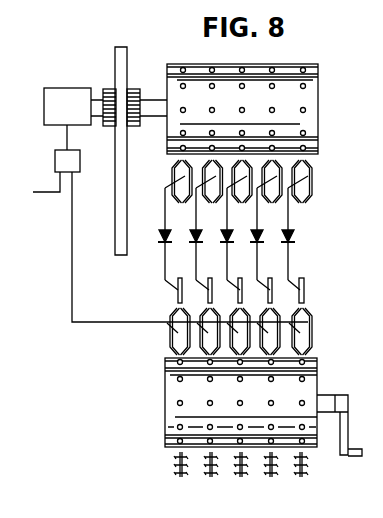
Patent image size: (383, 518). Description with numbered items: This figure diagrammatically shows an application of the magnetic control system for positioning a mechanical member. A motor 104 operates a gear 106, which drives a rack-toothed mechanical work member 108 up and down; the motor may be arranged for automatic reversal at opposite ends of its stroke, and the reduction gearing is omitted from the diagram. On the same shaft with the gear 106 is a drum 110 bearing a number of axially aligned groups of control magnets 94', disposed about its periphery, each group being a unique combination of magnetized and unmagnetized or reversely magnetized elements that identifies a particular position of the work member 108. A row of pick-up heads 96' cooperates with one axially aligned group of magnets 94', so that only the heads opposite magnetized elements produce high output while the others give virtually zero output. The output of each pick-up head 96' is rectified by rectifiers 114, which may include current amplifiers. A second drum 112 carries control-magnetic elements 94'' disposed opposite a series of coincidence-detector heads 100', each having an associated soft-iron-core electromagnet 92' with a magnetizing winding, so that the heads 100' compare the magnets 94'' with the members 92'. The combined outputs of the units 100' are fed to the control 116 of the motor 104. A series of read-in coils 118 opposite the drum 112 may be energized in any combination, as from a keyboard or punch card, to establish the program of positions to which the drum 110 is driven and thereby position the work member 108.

The motor 104 is at (65, 93).
The gear 106 is at (133, 89).
The rack-toothed mechanical work member 108 is at (118, 53).
The drum 110 is at (268, 109).
The second drum 112 is at (236, 407).
The rectifiers 114 is at (294, 238).
The control 116 is at (63, 155).
The read-in coils 118 is at (173, 463).
The control magnets 94' is at (270, 109).
The control-magnetic elements 94'' is at (210, 402).
The pick-up heads 96' is at (262, 178).
The coincidence-detector heads 100' is at (266, 331).
The electromagnet 92' is at (271, 278).